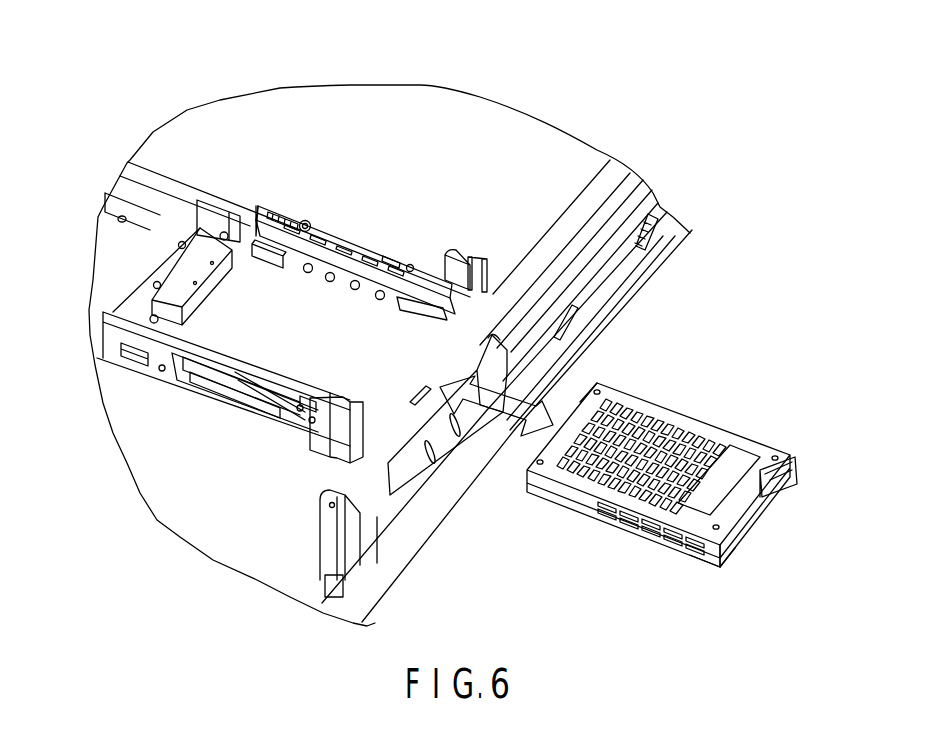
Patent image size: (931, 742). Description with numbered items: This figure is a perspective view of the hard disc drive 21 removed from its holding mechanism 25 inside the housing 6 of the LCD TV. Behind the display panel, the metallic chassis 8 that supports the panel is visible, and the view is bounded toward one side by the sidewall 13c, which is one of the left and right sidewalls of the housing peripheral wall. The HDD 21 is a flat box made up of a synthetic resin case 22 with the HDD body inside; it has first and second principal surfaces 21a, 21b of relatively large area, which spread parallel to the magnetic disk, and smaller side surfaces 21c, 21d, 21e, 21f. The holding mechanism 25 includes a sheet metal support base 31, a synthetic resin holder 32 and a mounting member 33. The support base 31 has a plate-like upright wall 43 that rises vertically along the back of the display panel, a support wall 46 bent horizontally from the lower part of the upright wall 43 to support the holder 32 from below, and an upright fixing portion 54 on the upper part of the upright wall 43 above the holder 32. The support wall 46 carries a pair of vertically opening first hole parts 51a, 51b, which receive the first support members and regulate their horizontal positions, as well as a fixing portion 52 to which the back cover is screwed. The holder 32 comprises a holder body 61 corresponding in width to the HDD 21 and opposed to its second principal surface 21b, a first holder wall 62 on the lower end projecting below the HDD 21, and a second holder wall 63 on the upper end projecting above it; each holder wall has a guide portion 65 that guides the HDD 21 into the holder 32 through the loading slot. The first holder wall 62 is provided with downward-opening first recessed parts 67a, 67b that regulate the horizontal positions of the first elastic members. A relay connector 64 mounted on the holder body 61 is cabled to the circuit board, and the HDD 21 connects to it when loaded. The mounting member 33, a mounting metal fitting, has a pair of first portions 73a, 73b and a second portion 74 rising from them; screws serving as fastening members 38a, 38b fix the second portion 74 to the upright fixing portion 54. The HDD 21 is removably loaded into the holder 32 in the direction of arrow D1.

The housing 6 is at (656, 266).
The chassis 8 is at (499, 119).
The sidewall 13c is at (592, 322).
The hard disc drive 21 is at (707, 419).
The first principal surface 21a is at (660, 408).
The second principal surface 21b is at (630, 532).
The side surface 21c is at (774, 445).
The side surface 21d is at (700, 552).
The side surface 21e is at (731, 548).
The side surface 21f is at (580, 400).
The case 22 is at (744, 440).
The holding mechanism 25 is at (330, 226).
The support base 31 is at (165, 385).
The holder 32 is at (263, 275).
The mounting member 33 is at (372, 247).
The fastening member 38a is at (411, 266).
The fastening member 38b is at (305, 222).
The upright wall 43 is at (153, 235).
The support wall 46 is at (277, 412).
The first hole part 51a is at (312, 426).
The first hole part 51b is at (158, 370).
The fixing portion 52 is at (258, 388).
The upright fixing portion 54 is at (200, 194).
The holder body 61 is at (257, 340).
The first holder wall 62 is at (230, 380).
The second holder wall 63 is at (338, 251).
The relay connector 64 is at (187, 270).
The guide portion 65 is at (428, 309).
The first recessed part 67a is at (310, 398).
The first recessed part 67b is at (182, 378).
The first portion 73a is at (440, 272).
The first portion 73b is at (272, 217).
The second portion 74 is at (388, 260).
The loading direction arrow D1 is at (500, 392).